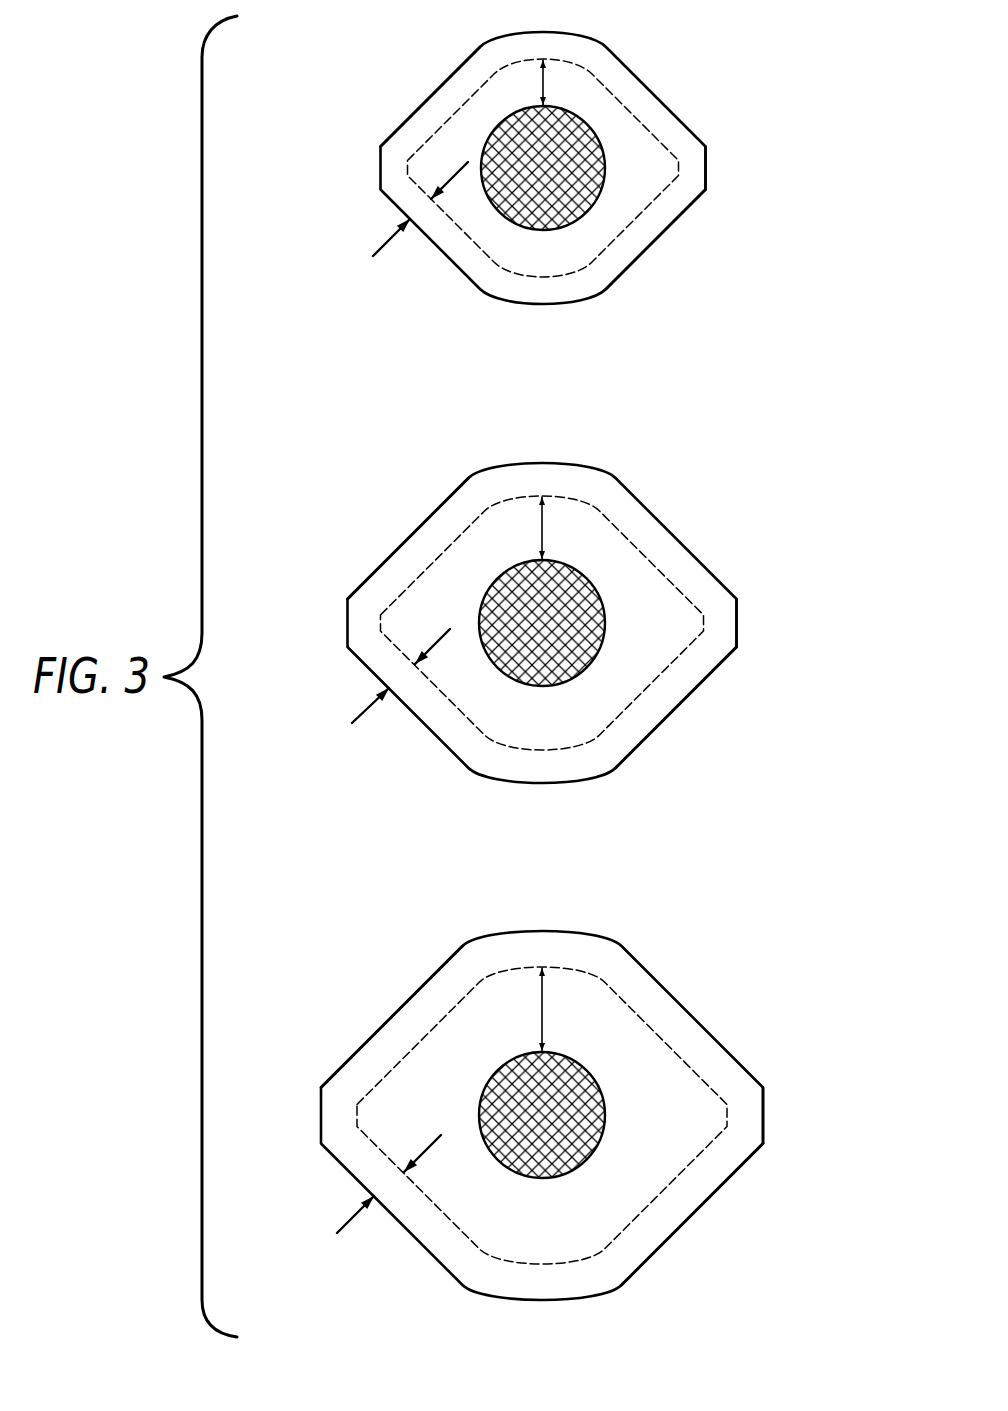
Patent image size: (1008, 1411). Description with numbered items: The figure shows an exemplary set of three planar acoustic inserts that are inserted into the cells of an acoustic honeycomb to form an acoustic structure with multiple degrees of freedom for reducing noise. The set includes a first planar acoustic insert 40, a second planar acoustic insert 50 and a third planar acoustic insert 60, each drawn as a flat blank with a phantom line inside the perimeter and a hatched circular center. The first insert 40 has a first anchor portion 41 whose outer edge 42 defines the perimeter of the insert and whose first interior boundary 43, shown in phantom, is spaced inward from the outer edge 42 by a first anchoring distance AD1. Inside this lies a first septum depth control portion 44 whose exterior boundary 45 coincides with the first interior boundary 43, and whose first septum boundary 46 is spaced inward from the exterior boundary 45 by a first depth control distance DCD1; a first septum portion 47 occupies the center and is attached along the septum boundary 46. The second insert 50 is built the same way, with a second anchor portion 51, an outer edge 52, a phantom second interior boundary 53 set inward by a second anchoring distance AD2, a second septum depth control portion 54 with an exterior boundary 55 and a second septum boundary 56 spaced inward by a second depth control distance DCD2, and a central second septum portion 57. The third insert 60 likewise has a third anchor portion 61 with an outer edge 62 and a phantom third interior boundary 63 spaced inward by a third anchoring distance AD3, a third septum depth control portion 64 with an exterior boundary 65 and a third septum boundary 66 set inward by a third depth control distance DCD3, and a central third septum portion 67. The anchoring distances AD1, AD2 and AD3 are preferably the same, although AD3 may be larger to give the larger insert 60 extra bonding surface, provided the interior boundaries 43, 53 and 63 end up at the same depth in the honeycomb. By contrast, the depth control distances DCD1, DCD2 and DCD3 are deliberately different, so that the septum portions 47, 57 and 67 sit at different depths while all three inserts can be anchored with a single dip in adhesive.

The first planar acoustic insert 40 is at (578, 167).
The first anchor portion 41 is at (677, 137).
The outer edge 42 is at (706, 167).
The first interior boundary 43 is at (598, 253).
The first septum depth control portion 44 is at (425, 167).
The exterior boundary 45 is at (436, 126).
The first septum boundary 46 is at (563, 106).
The first septum portion 47 is at (585, 137).
The first depth control distance DCD1 is at (540, 83).
The first anchoring distance AD1 is at (386, 243).
The second planar acoustic insert 50 is at (579, 604).
The second anchor portion 51 is at (697, 577).
The outer edge 52 is at (736, 610).
The second interior boundary 53 is at (661, 673).
The second septum depth control portion 54 is at (407, 630).
The exterior boundary 55 is at (398, 596).
The second septum boundary 56 is at (572, 562).
The second septum portion 57 is at (574, 593).
The second depth control distance DCD2 is at (542, 528).
The second anchoring distance AD2 is at (365, 713).
The third planar acoustic insert 60 is at (540, 1098).
The third anchor portion 61 is at (728, 1074).
The outer edge 62 is at (763, 1131).
The third interior boundary 63 is at (687, 1164).
The third septum depth control portion 64 is at (392, 1122).
The exterior boundary 65 is at (376, 1086).
The third septum boundary 66 is at (571, 1053).
The third septum portion 67 is at (575, 1087).
The third depth control distance DCD3 is at (536, 1011).
The third anchoring distance AD3 is at (351, 1220).